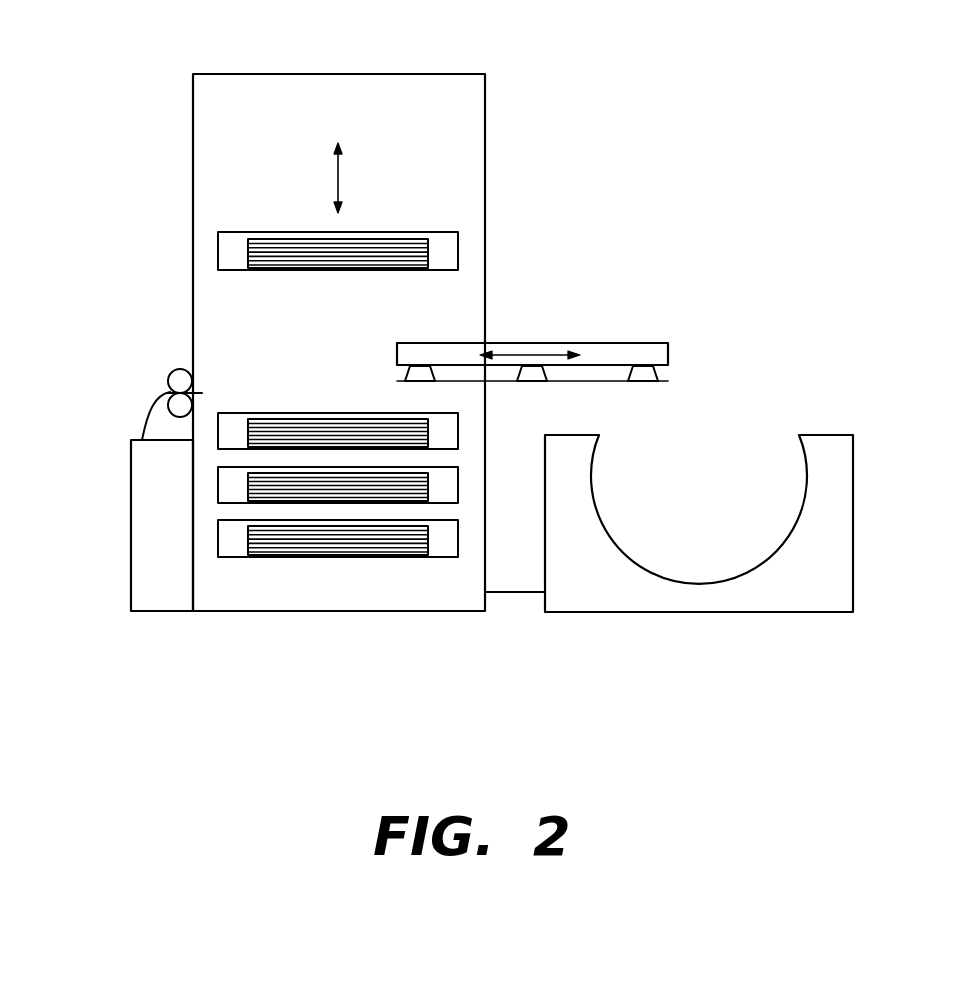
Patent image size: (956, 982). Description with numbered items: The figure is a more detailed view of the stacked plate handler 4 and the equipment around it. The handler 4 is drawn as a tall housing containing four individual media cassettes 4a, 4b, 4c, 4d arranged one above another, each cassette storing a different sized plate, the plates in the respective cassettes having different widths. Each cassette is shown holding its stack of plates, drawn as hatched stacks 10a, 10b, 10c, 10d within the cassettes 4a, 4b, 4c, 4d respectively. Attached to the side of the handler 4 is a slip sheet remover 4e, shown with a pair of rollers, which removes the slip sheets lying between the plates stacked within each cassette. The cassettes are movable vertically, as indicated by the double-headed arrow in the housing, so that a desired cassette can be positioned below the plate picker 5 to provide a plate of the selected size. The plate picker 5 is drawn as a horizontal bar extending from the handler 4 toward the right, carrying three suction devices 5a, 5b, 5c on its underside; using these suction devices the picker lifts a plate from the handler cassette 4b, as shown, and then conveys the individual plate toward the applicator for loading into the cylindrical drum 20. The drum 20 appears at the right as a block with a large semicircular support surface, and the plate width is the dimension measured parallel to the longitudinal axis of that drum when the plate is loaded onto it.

The handler 4 is at (432, 93).
The media cassette 4a is at (435, 234).
The media cassette 4b is at (443, 435).
The media cassette 4c is at (443, 490).
The media cassette 4d is at (443, 545).
The slip sheet remover 4e is at (152, 555).
The paper stack in first tray 10a is at (260, 250).
The paper stack in second tray 10b is at (260, 428).
The paper stack in third tray 10c is at (264, 486).
The paper stack in fourth tray 10d is at (287, 546).
The plate picker 5 is at (610, 355).
The suction device 5a is at (420, 374).
The suction device 5b is at (532, 375).
The suction device 5c is at (643, 375).
The cylindrical drum 20 is at (842, 593).